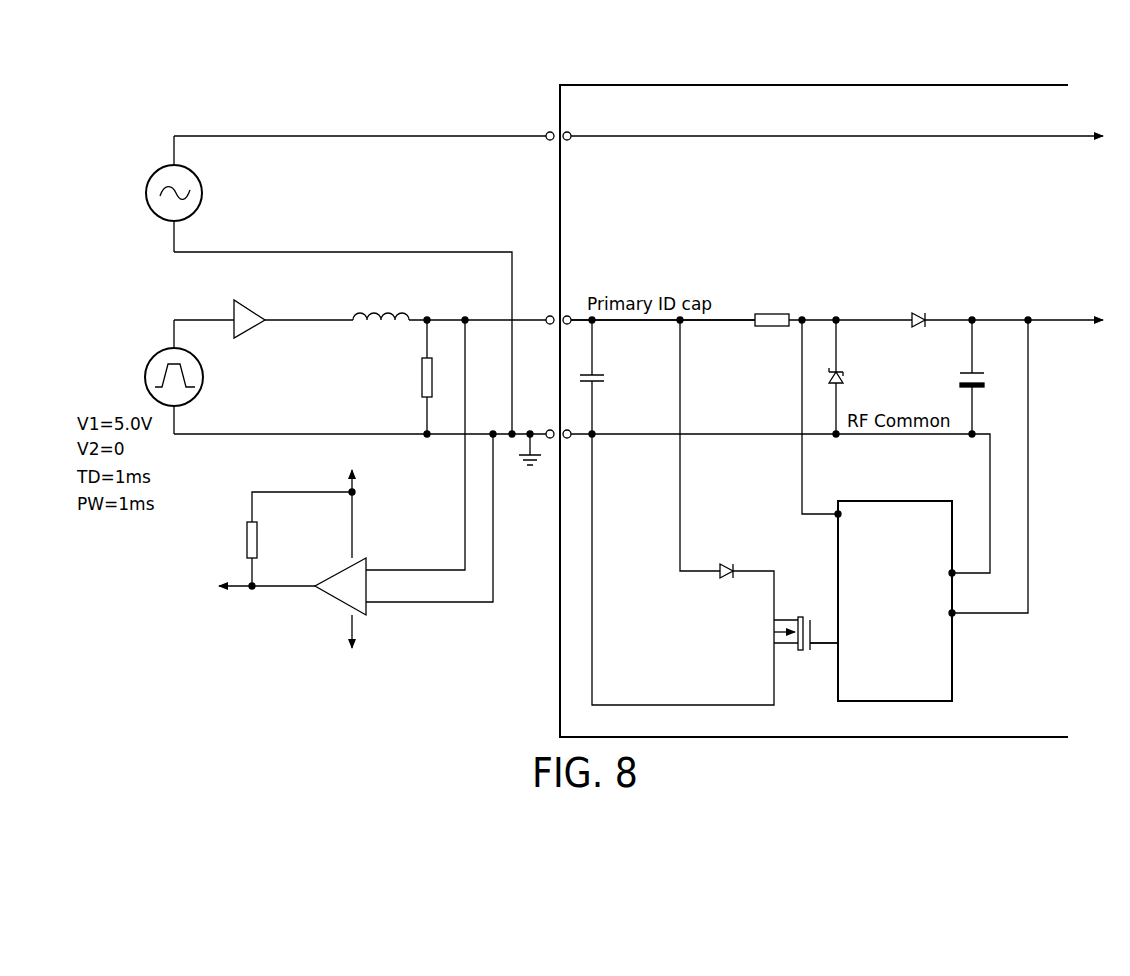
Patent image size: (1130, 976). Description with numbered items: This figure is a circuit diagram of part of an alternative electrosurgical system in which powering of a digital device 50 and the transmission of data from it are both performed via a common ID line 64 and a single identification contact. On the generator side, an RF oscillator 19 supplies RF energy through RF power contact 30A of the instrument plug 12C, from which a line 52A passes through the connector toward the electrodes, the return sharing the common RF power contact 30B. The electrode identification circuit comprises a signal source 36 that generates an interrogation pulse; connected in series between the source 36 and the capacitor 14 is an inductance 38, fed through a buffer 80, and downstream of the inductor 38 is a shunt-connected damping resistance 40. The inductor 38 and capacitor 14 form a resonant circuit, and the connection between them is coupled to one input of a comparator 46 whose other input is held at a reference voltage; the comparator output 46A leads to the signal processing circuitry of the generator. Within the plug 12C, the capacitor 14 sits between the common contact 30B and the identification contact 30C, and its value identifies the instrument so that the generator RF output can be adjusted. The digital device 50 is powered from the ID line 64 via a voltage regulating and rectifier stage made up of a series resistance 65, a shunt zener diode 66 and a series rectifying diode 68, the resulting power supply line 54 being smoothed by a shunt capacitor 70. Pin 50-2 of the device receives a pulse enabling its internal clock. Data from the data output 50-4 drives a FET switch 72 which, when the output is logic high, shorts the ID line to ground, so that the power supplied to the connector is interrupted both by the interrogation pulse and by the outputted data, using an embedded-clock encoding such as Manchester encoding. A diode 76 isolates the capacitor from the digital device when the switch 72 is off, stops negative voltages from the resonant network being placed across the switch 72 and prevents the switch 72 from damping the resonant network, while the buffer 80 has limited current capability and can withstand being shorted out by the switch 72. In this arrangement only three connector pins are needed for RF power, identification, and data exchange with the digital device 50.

The RF oscillator 19 is at (146, 193).
The buffer 80 is at (246, 300).
The inductance 38 is at (387, 307).
The signal source 36 is at (203, 377).
The damping resistance 40 is at (420, 378).
The comparator 46 is at (336, 602).
The comparator output 46A is at (296, 586).
The instrument plug 12C is at (1046, 85).
The RF power contact 30A is at (569, 141).
The line 52A is at (800, 138).
The common RF power contact 30B is at (569, 316).
The identification contact 30C is at (570, 438).
The ID line 64 is at (740, 314).
The series resistance 65 is at (771, 314).
The series rectifying diode 68 is at (917, 313).
The shunt capacitor 70 is at (981, 370).
The capacitor 14 is at (607, 378).
The shunt zener diode 66 is at (845, 381).
The power supply line 54 is at (1030, 459).
The pin 50-2 is at (826, 512).
The diode 76 is at (726, 566).
The FET switch 72 is at (800, 615).
The data output 50-4 is at (823, 650).
The digital device 50 is at (953, 692).